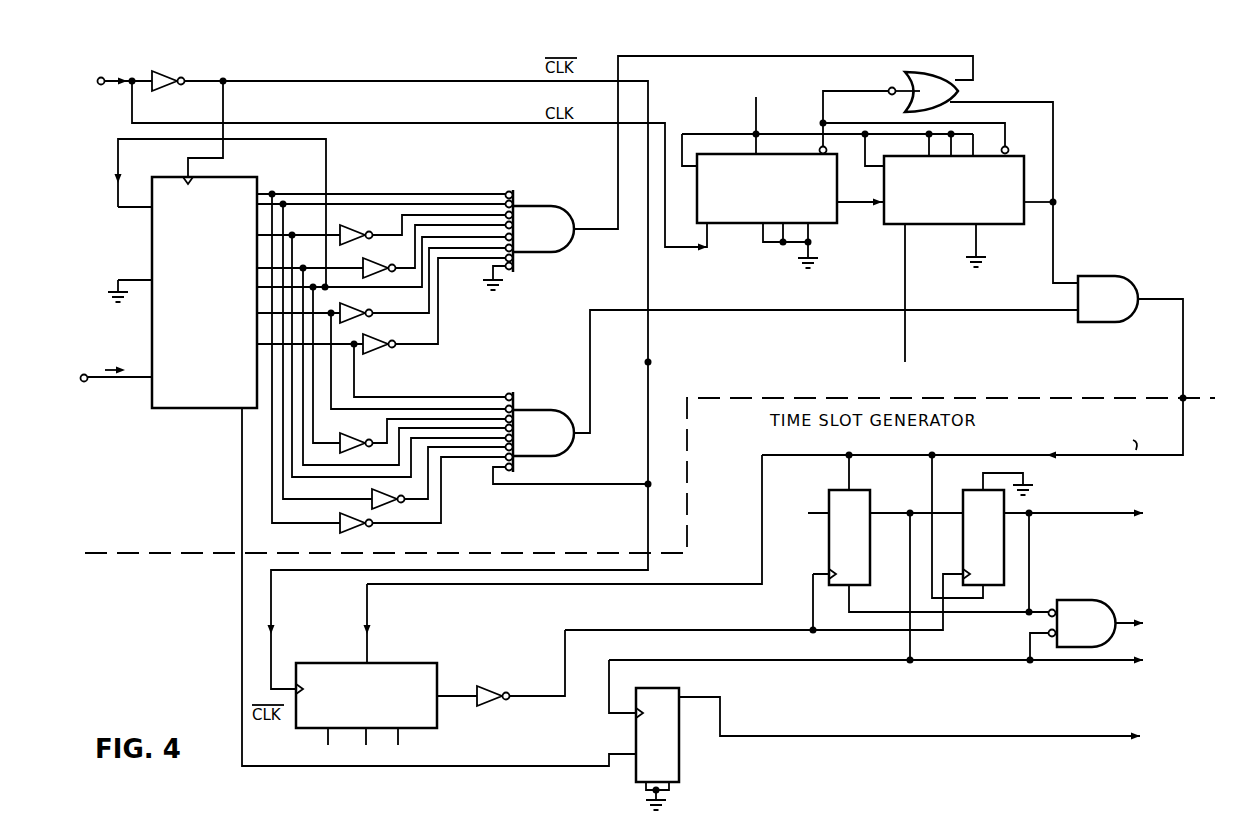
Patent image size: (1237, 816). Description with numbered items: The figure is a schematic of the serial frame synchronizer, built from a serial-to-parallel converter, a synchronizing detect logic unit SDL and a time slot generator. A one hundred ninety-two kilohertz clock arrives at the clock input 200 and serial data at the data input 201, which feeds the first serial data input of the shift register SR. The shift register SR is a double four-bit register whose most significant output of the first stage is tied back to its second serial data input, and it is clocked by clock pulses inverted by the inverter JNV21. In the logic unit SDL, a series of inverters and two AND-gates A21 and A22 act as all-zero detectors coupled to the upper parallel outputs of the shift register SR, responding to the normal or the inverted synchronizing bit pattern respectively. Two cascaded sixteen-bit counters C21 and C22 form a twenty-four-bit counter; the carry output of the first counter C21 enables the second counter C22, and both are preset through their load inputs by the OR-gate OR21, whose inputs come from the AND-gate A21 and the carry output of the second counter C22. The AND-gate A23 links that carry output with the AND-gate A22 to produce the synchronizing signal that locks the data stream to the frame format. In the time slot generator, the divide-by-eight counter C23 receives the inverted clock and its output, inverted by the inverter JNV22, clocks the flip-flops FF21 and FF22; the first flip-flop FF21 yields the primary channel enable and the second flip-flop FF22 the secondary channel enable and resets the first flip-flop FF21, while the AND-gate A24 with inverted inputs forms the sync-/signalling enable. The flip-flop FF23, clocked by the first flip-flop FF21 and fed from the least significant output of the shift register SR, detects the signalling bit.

The clock input 200 is at (86, 110).
The data input 201 is at (80, 394).
The inverter JNV21 is at (165, 74).
The inverter JNV22 is at (485, 700).
The shift register SR is at (166, 410).
The synchronizing detect logic unit SDL is at (423, 349).
The AND-gate A21 is at (537, 206).
The AND-gate A22 is at (537, 409).
The AND-gate A23 is at (1100, 281).
The AND-gate A24 is at (1090, 608).
The OR-gate OR21 is at (984, 177).
The first counter C21 is at (735, 225).
The second counter C22 is at (932, 225).
The 8-bit counter C23 is at (327, 661).
The first D flip-flop FF21 is at (829, 548).
The second D flip-flop FF22 is at (1004, 556).
The D flip-flop FF23 is at (679, 757).